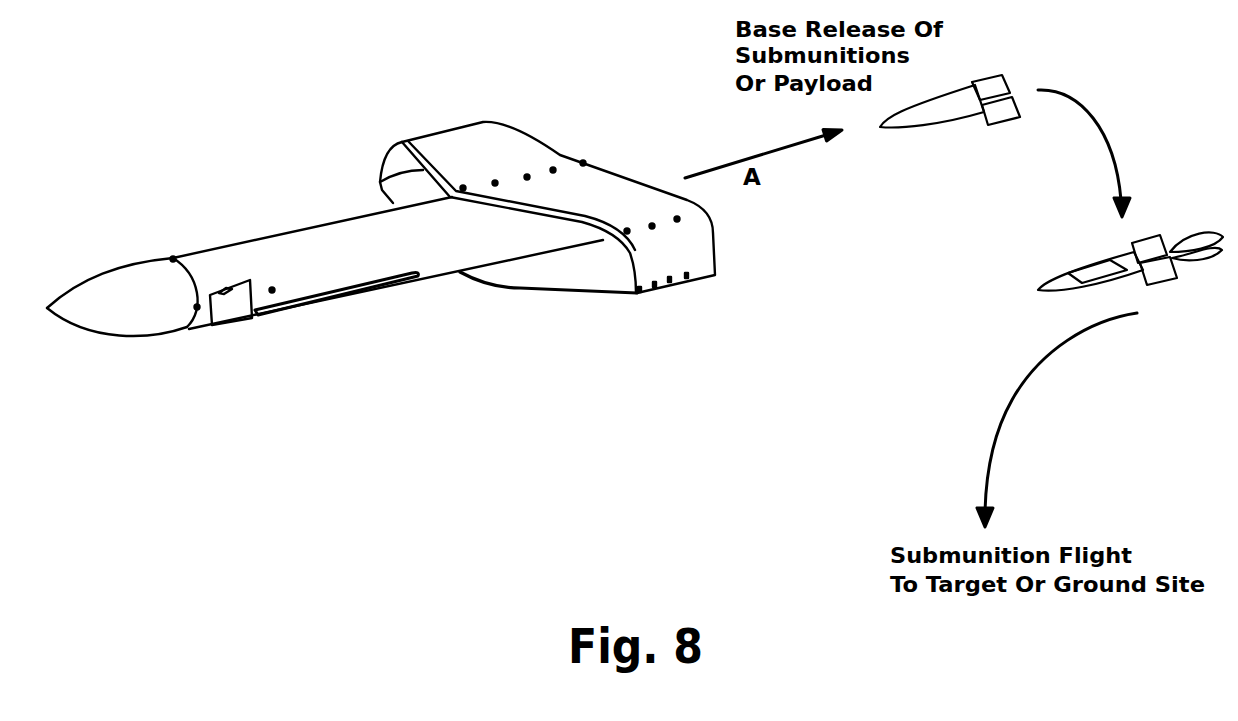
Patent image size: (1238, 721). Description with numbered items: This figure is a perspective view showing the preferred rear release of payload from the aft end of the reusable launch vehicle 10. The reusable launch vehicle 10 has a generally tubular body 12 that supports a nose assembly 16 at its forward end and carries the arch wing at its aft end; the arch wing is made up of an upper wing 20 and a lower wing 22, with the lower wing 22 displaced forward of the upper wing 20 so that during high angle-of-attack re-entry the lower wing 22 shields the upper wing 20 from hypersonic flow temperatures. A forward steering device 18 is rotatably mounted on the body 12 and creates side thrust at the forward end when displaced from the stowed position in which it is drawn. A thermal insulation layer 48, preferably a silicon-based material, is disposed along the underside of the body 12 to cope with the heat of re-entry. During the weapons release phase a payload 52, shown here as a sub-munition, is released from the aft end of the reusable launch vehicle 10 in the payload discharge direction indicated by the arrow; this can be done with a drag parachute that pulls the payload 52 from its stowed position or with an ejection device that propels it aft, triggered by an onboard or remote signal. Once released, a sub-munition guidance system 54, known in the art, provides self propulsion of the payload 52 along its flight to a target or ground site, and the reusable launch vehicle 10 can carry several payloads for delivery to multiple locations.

The reusable launch vehicle 10 is at (220, 125).
The body 12 is at (267, 252).
The nose assembly 16 is at (105, 297).
The forward steering device 18 is at (232, 305).
The upper wing 20 is at (468, 143).
The lower wing 22 is at (548, 275).
The thermal insulation layer 48 is at (342, 300).
The payload 52 is at (920, 125).
The sub-munition guidance system 54 is at (1085, 272).